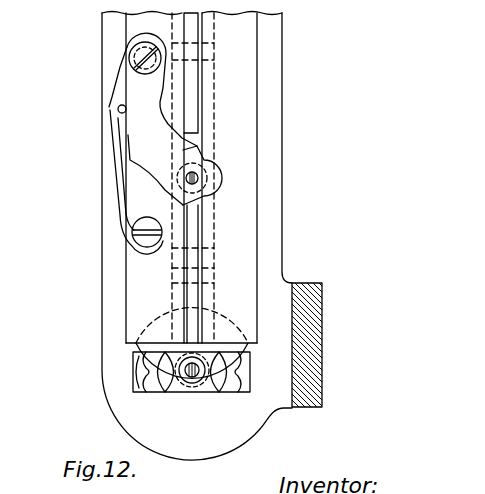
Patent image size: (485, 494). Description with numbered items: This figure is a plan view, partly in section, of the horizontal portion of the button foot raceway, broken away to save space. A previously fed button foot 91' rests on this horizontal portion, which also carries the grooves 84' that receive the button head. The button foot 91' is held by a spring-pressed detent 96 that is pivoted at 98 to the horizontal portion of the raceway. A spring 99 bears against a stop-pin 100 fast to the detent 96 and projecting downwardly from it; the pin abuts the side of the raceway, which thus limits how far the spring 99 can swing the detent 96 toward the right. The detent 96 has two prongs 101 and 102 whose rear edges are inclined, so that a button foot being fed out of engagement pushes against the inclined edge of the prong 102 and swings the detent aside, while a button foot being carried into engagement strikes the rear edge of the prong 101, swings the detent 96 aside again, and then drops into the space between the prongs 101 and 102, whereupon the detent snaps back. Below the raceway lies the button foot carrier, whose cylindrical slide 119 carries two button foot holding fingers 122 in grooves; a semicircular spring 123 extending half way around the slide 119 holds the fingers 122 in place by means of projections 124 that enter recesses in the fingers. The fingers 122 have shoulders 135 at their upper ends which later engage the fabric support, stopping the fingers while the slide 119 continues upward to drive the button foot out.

The pivot 98 is at (129, 50).
The detent 96 is at (122, 88).
The spring 99 is at (122, 153).
The stop-pin 100 is at (126, 112).
The prong 101 is at (200, 151).
The button foot 91' is at (259, 174).
The prong 102 is at (199, 200).
The grooves 84' is at (194, 256).
The slide 119 is at (205, 418).
The button foot holding fingers 122 is at (170, 377).
The semicircular spring 123 is at (248, 388).
The projections 124 is at (145, 368).
The shoulders 135 is at (145, 363).